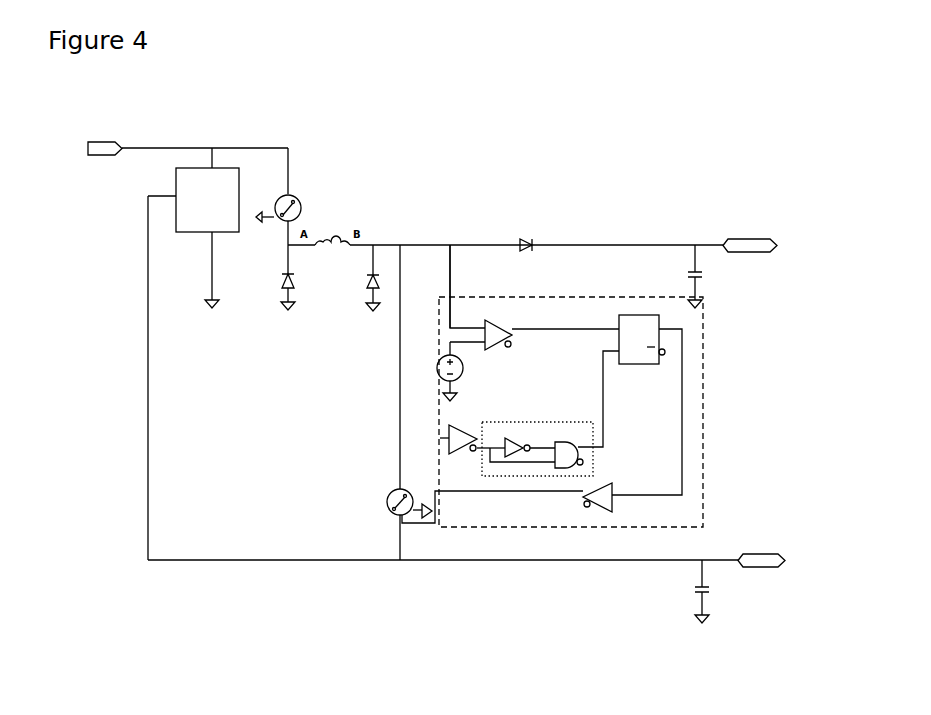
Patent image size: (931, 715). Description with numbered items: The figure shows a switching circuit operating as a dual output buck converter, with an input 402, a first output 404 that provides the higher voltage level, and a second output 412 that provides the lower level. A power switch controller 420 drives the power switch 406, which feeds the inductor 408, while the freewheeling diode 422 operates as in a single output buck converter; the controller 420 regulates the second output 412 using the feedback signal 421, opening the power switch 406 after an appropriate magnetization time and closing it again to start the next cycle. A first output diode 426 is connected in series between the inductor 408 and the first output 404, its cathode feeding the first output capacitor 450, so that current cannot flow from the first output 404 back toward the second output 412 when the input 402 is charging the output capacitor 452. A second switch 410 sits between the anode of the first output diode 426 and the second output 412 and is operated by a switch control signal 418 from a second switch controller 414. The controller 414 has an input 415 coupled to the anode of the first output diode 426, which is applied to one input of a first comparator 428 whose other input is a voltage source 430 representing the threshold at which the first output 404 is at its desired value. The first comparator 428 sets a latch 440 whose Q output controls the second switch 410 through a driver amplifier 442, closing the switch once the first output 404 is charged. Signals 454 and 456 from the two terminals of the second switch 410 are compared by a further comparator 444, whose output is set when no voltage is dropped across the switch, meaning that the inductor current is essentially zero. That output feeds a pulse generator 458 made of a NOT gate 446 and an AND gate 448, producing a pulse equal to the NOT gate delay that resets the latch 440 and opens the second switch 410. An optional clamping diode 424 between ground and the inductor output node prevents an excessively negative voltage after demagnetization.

The input 402 is at (98, 156).
The first output 404 is at (743, 238).
The power switch 406 is at (297, 194).
The inductor 408 is at (345, 240).
The second switch 410 is at (387, 500).
The second output 412 is at (760, 553).
The second switch controller 414 is at (700, 420).
The input 415 is at (448, 270).
The switch control signal 418 is at (460, 491).
The power switch controller 420 is at (220, 168).
The feedback signal 421 is at (227, 560).
The diode D1 422 is at (283, 277).
The diode D3 424 is at (377, 282).
The first output diode D2 426 is at (528, 240).
The comparator A1 428 is at (502, 327).
The voltage source V1 430 is at (433, 372).
The latch 440 is at (645, 313).
The driver amplifier A4 442 is at (600, 505).
The comparator A3 444 is at (447, 438).
The NOT gate A5 446 is at (517, 452).
The AND gate A6 448 is at (560, 468).
The first output capacitor C1 450 is at (698, 277).
The output capacitor C2 452 is at (705, 592).
The signal 454 is at (447, 435).
The signal 456 is at (417, 527).
The pulse generator 458 is at (593, 457).